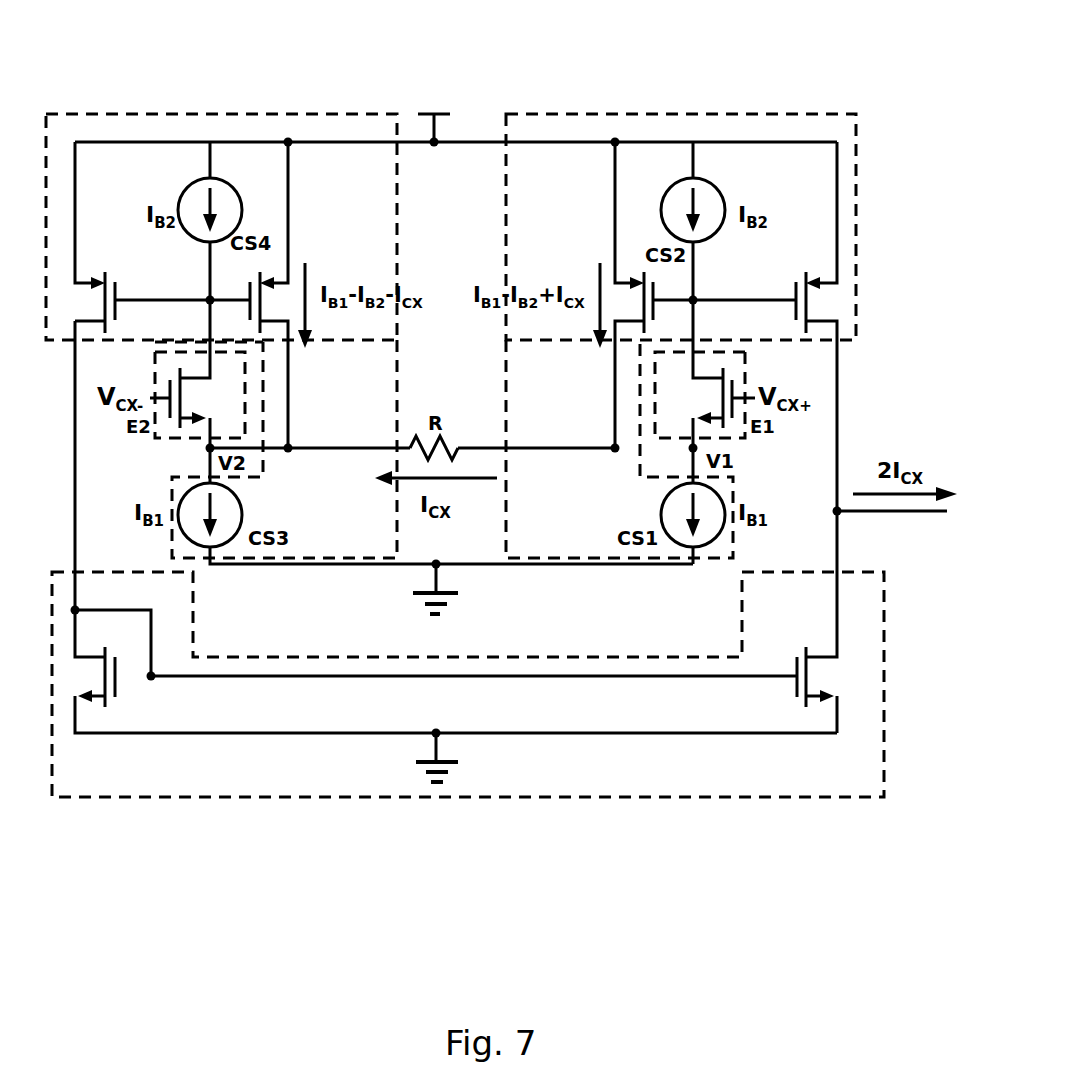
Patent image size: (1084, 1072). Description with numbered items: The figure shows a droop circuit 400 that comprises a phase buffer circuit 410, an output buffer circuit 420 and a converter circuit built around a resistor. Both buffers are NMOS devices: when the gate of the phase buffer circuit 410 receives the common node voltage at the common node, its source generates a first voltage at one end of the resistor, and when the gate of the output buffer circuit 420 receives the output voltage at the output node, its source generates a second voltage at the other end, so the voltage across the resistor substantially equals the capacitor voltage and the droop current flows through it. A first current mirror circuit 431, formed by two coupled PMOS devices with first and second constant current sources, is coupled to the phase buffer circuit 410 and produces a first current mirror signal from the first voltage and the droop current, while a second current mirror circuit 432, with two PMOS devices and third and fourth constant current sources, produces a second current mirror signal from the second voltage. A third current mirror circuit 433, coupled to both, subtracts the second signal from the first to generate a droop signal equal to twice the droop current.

The droop circuit 400 is at (872, 62).
The phase buffer circuit 410 is at (735, 440).
The output buffer circuit 420 is at (191, 438).
The first current mirror circuit 431 is at (562, 551).
The second current mirror circuit 432 is at (376, 551).
The third current mirror circuit 433 is at (869, 790).